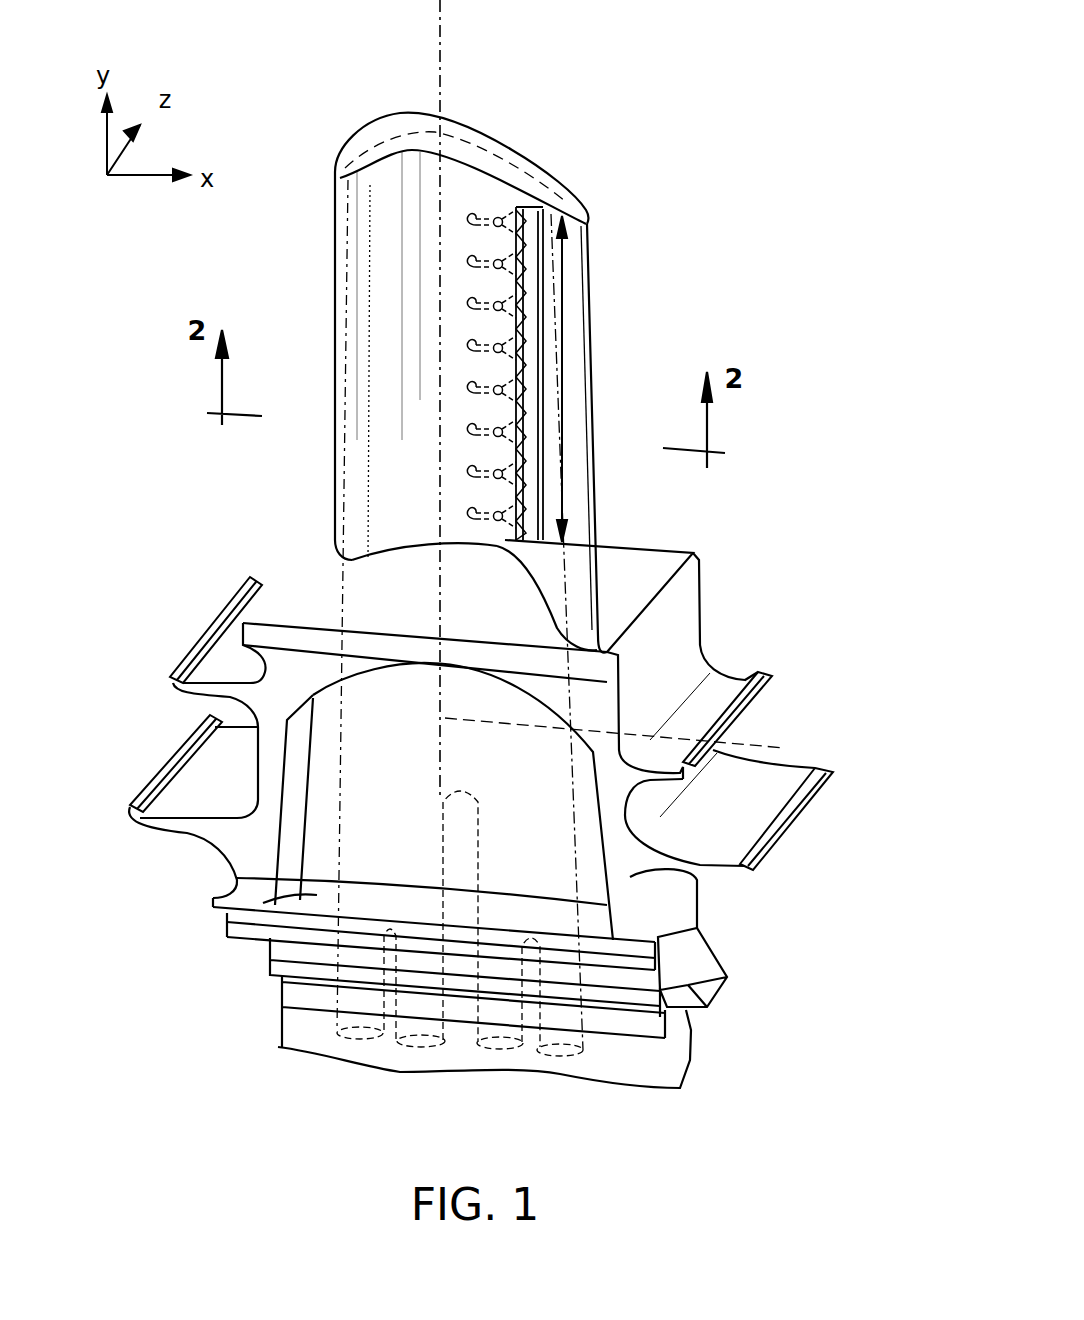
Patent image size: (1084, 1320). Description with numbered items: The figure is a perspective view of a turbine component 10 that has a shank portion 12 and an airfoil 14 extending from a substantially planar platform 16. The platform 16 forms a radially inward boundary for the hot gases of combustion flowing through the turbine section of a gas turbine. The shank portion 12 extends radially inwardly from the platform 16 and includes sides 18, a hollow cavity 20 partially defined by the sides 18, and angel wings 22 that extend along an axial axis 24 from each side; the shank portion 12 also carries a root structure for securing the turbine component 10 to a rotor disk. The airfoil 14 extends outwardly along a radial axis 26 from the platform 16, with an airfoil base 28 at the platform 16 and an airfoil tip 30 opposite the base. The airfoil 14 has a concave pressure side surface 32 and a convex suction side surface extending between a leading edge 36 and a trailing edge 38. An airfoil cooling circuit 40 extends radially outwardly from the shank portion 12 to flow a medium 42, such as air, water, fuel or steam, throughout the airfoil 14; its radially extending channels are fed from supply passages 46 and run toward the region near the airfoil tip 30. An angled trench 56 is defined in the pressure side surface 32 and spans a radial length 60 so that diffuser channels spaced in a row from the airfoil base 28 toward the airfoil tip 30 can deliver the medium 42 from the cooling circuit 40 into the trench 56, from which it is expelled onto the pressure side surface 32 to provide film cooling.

The turbine component 10 is at (597, 136).
The shank portion 12 is at (213, 845).
The airfoil 14 is at (473, 311).
The platform 16 is at (307, 587).
The sides 18 is at (262, 872).
The hollow cavity 20 is at (265, 890).
The angel wings 22 is at (207, 625).
The axial axis 24 is at (777, 748).
The radial axis 26 is at (440, 40).
The airfoil base 28 is at (336, 522).
The airfoil tip 30 is at (354, 134).
The pressure side surface 32 is at (577, 420).
The leading edge 36 is at (334, 248).
The trailing edge 38 is at (592, 356).
The airfoil cooling circuit 40 is at (348, 364).
The medium 42 is at (348, 395).
The supply passages 46 is at (423, 1043).
The angled trench 56 is at (540, 263).
The radial length 60 is at (568, 458).